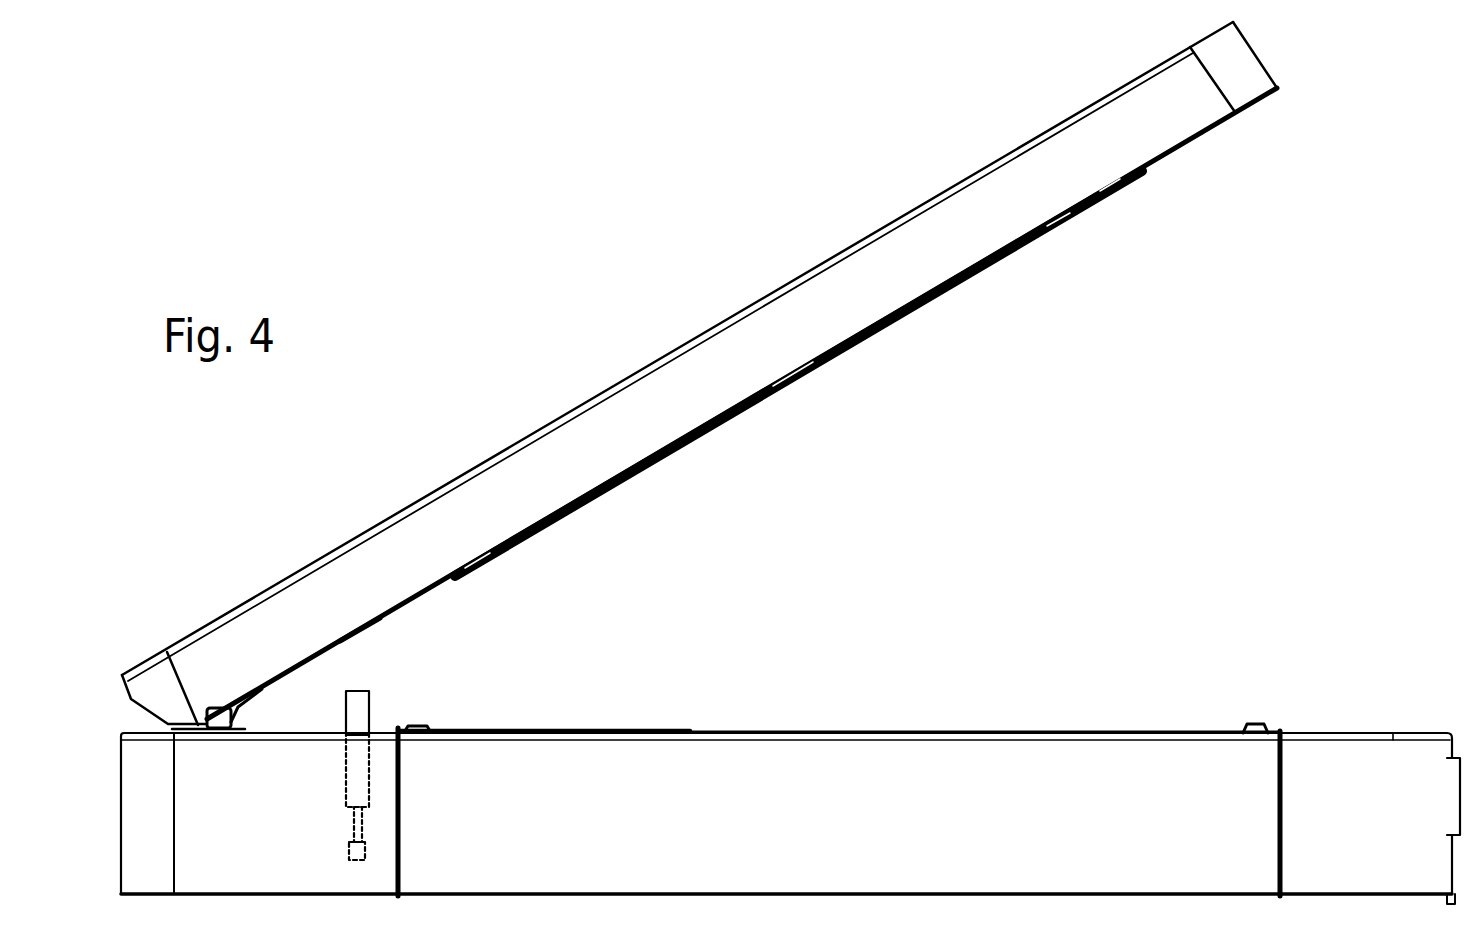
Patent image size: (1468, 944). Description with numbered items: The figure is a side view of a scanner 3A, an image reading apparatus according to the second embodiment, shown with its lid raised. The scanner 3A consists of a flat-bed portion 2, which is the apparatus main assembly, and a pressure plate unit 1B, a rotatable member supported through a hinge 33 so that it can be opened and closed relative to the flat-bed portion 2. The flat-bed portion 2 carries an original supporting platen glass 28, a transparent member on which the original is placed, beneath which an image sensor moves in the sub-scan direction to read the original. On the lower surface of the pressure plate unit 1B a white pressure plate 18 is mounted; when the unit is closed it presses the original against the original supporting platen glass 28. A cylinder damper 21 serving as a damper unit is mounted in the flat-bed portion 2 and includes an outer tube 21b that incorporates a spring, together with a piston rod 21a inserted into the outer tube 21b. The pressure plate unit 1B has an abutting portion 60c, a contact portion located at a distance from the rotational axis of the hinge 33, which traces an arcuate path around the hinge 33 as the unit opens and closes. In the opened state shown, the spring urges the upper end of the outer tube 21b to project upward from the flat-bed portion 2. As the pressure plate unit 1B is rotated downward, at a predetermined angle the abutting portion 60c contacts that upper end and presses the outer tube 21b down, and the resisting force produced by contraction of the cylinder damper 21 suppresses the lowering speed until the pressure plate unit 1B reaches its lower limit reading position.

The pressure plate unit 1B is at (509, 422).
The scanner 3A is at (625, 249).
The white pressure plate 18 is at (880, 337).
The abutting portion 60c is at (343, 639).
The flat-bed portion 2 is at (791, 712).
The original supporting platen glass 28 is at (908, 728).
The hinge 33 is at (167, 728).
The cylinder damper 21 is at (535, 660).
The piston rod 21a is at (363, 843).
The outer tube 21b is at (370, 710).